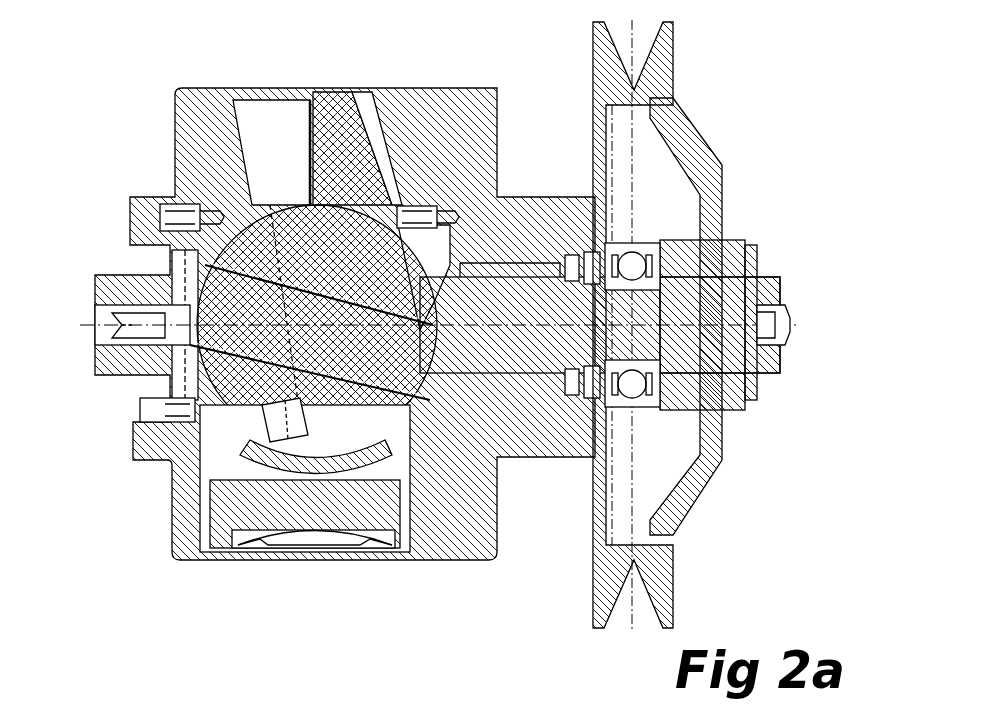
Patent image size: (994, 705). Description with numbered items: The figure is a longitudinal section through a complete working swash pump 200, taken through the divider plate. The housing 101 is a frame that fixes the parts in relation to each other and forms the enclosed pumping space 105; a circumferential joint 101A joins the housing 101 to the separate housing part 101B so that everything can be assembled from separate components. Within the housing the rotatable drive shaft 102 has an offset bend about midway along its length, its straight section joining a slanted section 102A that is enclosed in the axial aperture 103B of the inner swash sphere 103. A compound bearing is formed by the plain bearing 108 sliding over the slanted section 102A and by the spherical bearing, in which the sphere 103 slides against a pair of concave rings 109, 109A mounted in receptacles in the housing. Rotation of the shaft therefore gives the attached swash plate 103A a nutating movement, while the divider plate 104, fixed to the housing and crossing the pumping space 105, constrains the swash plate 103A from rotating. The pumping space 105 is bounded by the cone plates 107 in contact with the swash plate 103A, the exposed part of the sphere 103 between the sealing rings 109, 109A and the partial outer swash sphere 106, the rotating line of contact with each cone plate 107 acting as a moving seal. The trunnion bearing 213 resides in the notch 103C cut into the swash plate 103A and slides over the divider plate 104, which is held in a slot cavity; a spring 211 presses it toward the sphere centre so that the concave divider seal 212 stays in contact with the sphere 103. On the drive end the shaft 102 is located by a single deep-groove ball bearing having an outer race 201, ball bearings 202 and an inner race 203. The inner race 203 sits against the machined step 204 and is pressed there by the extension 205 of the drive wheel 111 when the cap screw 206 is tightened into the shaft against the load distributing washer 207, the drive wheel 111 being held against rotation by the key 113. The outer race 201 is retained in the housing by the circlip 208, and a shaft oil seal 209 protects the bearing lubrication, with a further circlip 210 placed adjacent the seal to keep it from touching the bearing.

The valve assembly 200 is at (180, 18).
The housing 101 is at (470, 88).
The circumferential joint 101A is at (328, 88).
The housing part 101B is at (218, 88).
The drive shaft 102 is at (492, 530).
The slanted section 102A is at (167, 462).
The inner swash sphere 103 is at (200, 250).
The swash plate 103A is at (400, 120).
The axial aperture 103B is at (475, 165).
The notch 103C is at (175, 470).
The divider plate 104 is at (430, 560).
The pumping space 105 is at (255, 135).
The partial outer swash sphere 106 is at (292, 115).
The cone plate 107 is at (235, 160).
The plain bearing 108 is at (165, 380).
The concave spherical bearing ring 109 is at (160, 205).
The concave spherical bearing ring 109A is at (445, 560).
The drive wheel 111 is at (688, 130).
The key 113 is at (748, 246).
The outer race 201 is at (598, 480).
The ball bearings 202 is at (690, 138).
The inner race 203 is at (615, 200).
The step 204 is at (540, 430).
The extension 205 is at (750, 380).
The cap screw 206 is at (778, 305).
The load distributing washer 207 is at (760, 272).
The circlip 208 is at (745, 412).
The shaft oil seal 209 is at (545, 230).
The circlip 210 is at (590, 235).
The spring 211 is at (262, 555).
The divider seal 212 is at (305, 520).
The trunnion bearing 213 is at (205, 505).